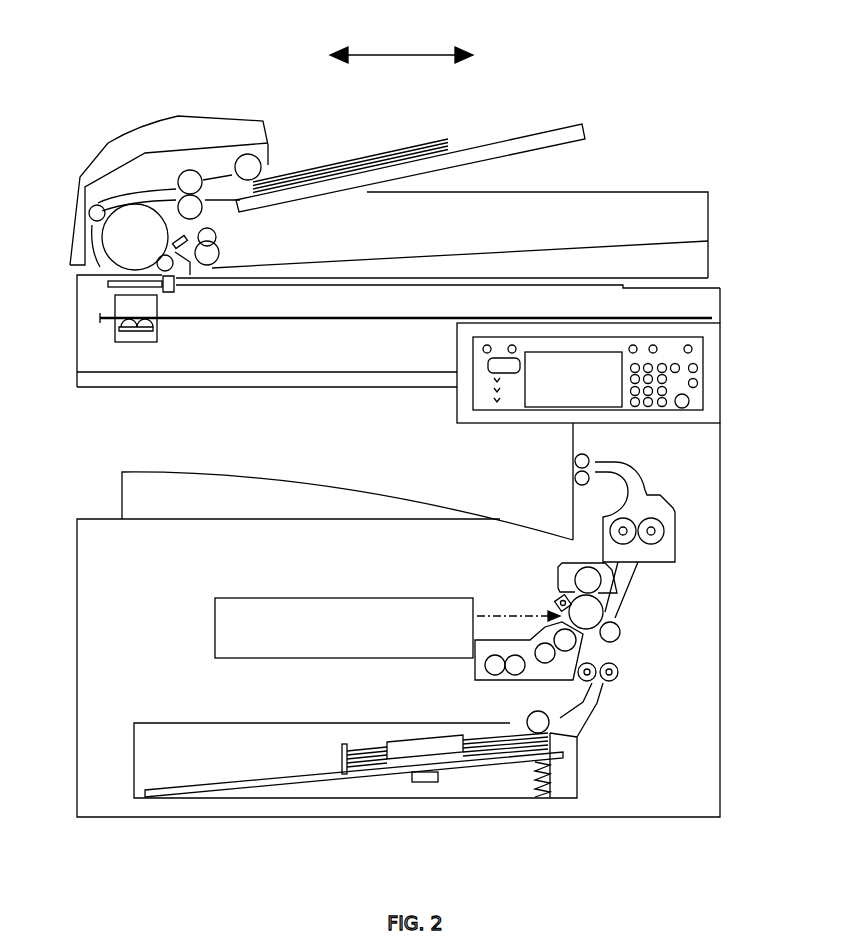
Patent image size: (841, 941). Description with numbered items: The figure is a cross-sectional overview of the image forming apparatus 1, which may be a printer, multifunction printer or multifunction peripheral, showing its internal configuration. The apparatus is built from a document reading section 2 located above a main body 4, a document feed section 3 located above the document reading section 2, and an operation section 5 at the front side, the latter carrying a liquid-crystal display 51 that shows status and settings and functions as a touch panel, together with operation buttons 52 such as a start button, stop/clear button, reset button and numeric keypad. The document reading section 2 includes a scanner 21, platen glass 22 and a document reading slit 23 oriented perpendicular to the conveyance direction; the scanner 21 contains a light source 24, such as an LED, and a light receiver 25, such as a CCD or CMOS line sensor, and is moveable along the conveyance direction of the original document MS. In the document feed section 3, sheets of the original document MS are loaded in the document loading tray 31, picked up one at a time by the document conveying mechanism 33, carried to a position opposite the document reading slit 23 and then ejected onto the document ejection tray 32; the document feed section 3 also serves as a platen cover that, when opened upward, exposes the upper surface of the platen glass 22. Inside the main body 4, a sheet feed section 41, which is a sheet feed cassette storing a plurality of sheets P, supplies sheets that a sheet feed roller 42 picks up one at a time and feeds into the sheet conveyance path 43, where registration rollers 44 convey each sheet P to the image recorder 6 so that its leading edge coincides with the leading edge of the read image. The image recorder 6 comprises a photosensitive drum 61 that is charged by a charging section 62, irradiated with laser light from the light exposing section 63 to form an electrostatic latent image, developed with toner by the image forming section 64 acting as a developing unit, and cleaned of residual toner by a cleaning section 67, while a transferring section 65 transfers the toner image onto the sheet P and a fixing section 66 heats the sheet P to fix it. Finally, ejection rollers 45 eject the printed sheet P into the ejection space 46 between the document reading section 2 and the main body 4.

The image forming apparatus 1 is at (656, 114).
The document reading section 2 is at (58, 322).
The document feed section 3 is at (58, 209).
The main body 4 is at (58, 587).
The operation section 5 is at (788, 322).
The image recorder 6 is at (470, 578).
The scanner 21 is at (151, 342).
The platen glass 22 is at (370, 285).
The document reading slit 23 is at (108, 283).
The light source 24 is at (120, 317).
The light receiver 25 is at (150, 318).
The document loading tray 31 is at (553, 125).
The document ejection tray 32 is at (473, 253).
The document conveying mechanism 33 is at (202, 118).
The sheet feed section 41 is at (580, 752).
The sheet feed roller 42 is at (530, 720).
The sheet conveyance path 43 is at (600, 705).
The registration rollers 44 is at (620, 672).
The ejection rollers 45 is at (576, 458).
The ejection space 46 is at (326, 482).
The liquid-crystal display 51 is at (605, 363).
The operation buttons 52 is at (660, 378).
The photosensitive drum 61 is at (595, 608).
The charging section 62 is at (556, 599).
The light exposing section 63 is at (253, 637).
The image forming section 64 is at (477, 671).
The transferring section 65 is at (619, 631).
The fixing section 66 is at (605, 524).
The cleaning section 67 is at (561, 568).
The original document MS is at (363, 152).
The sheet P is at (372, 748).